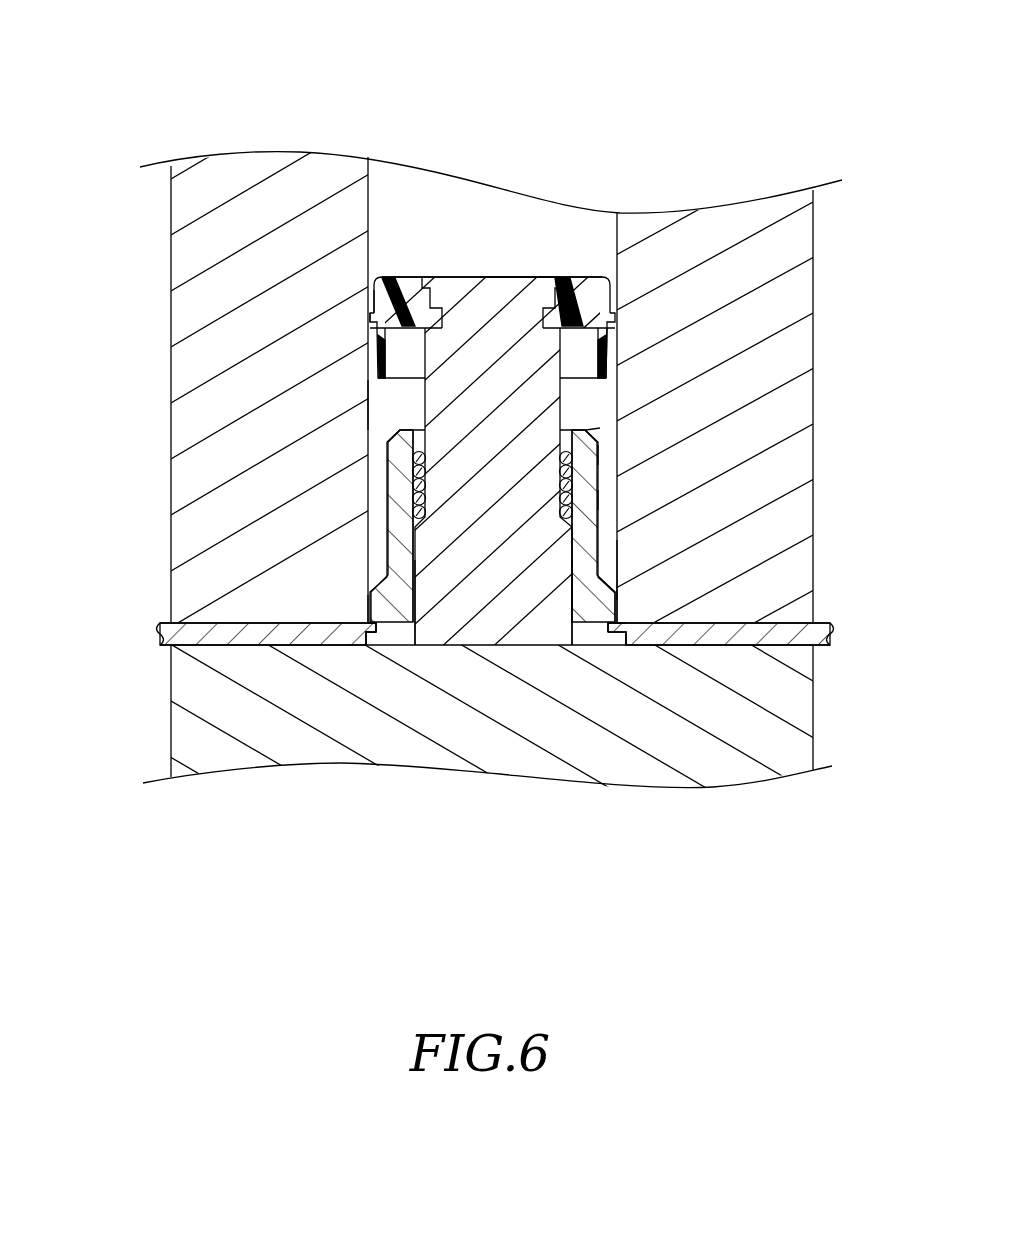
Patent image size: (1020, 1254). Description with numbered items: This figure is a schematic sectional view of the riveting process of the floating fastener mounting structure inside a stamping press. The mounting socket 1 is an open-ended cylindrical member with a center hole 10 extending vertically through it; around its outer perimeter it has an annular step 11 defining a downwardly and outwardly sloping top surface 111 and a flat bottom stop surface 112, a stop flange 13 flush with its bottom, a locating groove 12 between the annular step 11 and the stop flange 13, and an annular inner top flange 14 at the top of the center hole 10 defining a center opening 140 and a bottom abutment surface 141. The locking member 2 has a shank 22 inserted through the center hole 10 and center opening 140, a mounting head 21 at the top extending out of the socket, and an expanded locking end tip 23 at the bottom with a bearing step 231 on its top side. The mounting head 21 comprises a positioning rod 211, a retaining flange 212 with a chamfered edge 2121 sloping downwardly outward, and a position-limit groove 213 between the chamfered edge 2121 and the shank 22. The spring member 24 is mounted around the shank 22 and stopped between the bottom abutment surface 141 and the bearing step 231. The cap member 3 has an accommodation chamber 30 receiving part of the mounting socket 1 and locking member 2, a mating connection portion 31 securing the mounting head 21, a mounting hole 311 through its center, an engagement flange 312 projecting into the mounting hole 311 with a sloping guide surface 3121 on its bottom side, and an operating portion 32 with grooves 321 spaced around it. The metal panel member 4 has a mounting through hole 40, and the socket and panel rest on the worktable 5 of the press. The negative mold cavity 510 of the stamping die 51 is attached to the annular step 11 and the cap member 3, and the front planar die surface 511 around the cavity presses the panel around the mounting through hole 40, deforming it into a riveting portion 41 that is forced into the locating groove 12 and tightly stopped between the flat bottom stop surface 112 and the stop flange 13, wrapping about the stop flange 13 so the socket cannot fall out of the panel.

The mounting socket 1 is at (607, 515).
The center hole 10 is at (600, 540).
The annular step 11 is at (615, 630).
The top surface 111 is at (618, 579).
The flat bottom stop surface 112 is at (620, 637).
The locating groove 12 is at (610, 627).
The stop flange 13 is at (608, 625).
The annular inner top flange 14 is at (587, 430).
The center opening 140 is at (610, 449).
The bottom abutment surface 141 is at (608, 468).
The locking member 2 is at (106, 553).
The mounting head 21 is at (360, 410).
The positioning rod 211 is at (499, 280).
The retaining flange 212 is at (378, 282).
The chamfered edge 2121 is at (438, 278).
The position-limit groove 213 is at (378, 300).
The shank 22 is at (455, 555).
The expanded locking end tip 23 is at (477, 632).
The bearing step 231 is at (413, 503).
The spring member 24 is at (392, 450).
The cap member 3 is at (509, 240).
The accommodation chamber 30 is at (382, 352).
The mating connection portion 31 is at (585, 152).
The mounting hole 311 is at (545, 280).
The engagement flange 312 is at (609, 318).
The sloping guide surface 3121 is at (605, 365).
The operating portion 32 is at (372, 298).
The grooves 321 is at (372, 304).
The metal panel member 4 is at (252, 638).
The mounting through hole 40 is at (357, 640).
The riveting portion 41 is at (368, 625).
The worktable 5 is at (183, 684).
The stamping die 51 is at (183, 247).
The negative mold cavity 510 is at (382, 412).
The front planar die surface 511 is at (366, 608).